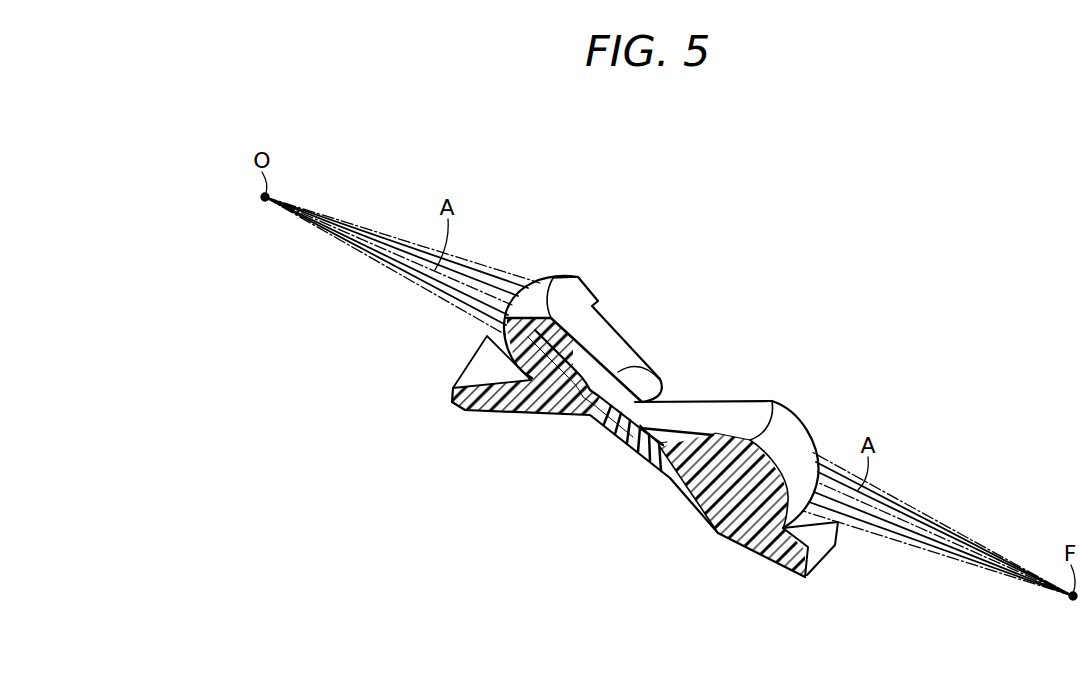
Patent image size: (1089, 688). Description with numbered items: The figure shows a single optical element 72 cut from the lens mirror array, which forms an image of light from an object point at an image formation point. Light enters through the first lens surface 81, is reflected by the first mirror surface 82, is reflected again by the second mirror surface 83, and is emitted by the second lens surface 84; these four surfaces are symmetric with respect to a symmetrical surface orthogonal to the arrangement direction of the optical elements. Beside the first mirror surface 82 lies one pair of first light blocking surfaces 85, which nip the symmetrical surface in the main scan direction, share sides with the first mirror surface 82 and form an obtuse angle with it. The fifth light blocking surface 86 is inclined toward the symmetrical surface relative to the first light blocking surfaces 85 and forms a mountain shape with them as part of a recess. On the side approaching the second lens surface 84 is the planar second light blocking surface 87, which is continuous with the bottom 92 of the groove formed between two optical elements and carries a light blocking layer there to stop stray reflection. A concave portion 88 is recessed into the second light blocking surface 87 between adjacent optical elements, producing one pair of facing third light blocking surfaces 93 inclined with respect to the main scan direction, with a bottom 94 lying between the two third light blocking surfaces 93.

The optical element 72 is at (782, 304).
The first lens surface 81 is at (548, 283).
The first mirror surface 82 is at (603, 330).
The second mirror surface 83 is at (640, 468).
The second lens surface 84 is at (790, 430).
The first light blocking surfaces 85 is at (595, 366).
The fifth light blocking surface 86 is at (662, 380).
The second light blocking surface 87 is at (724, 402).
The concave portion 88 is at (677, 438).
The bottom of the groove 92 is at (583, 403).
The third light blocking surfaces 93 is at (660, 443).
The bottom of the concave portion 94 is at (638, 445).